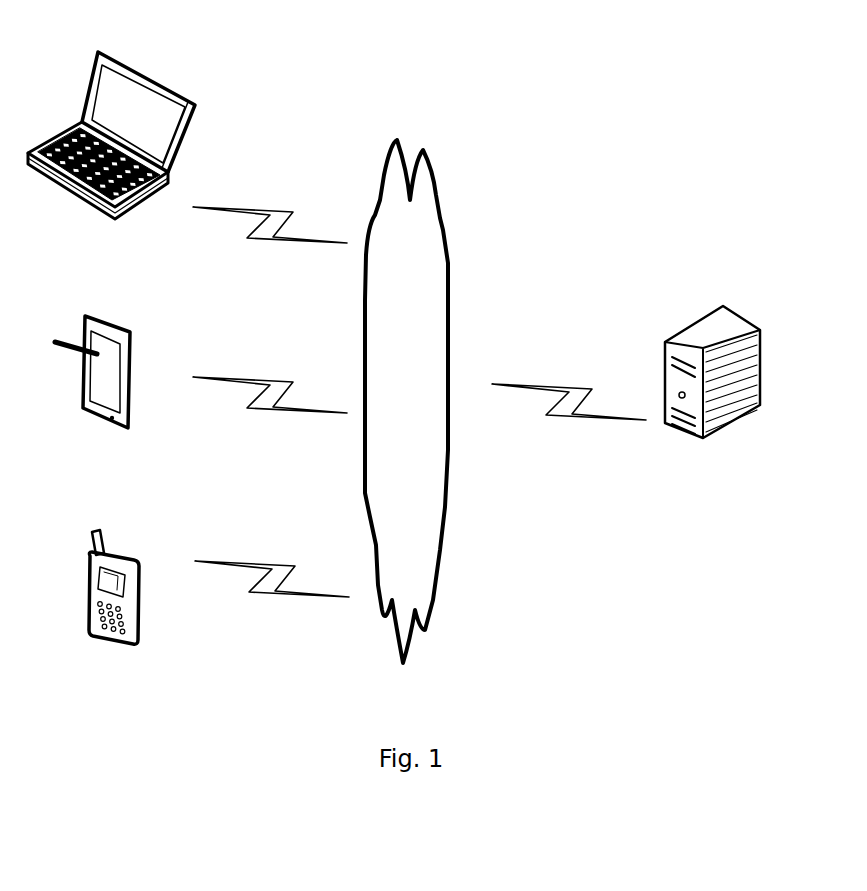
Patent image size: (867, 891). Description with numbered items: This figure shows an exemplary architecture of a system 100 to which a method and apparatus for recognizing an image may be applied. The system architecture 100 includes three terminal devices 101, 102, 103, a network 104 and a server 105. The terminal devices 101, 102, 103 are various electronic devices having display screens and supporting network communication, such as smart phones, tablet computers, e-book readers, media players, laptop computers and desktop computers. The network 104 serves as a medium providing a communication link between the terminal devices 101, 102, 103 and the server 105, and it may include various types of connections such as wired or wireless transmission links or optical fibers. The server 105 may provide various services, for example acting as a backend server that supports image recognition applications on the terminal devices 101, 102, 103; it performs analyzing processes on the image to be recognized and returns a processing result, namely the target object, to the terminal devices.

The system architecture 100 is at (668, 44).
The terminal device 101 is at (114, 606).
The terminal device 102 is at (92, 392).
The terminal device 103 is at (111, 156).
The network 104 is at (406, 401).
The server 105 is at (712, 397).